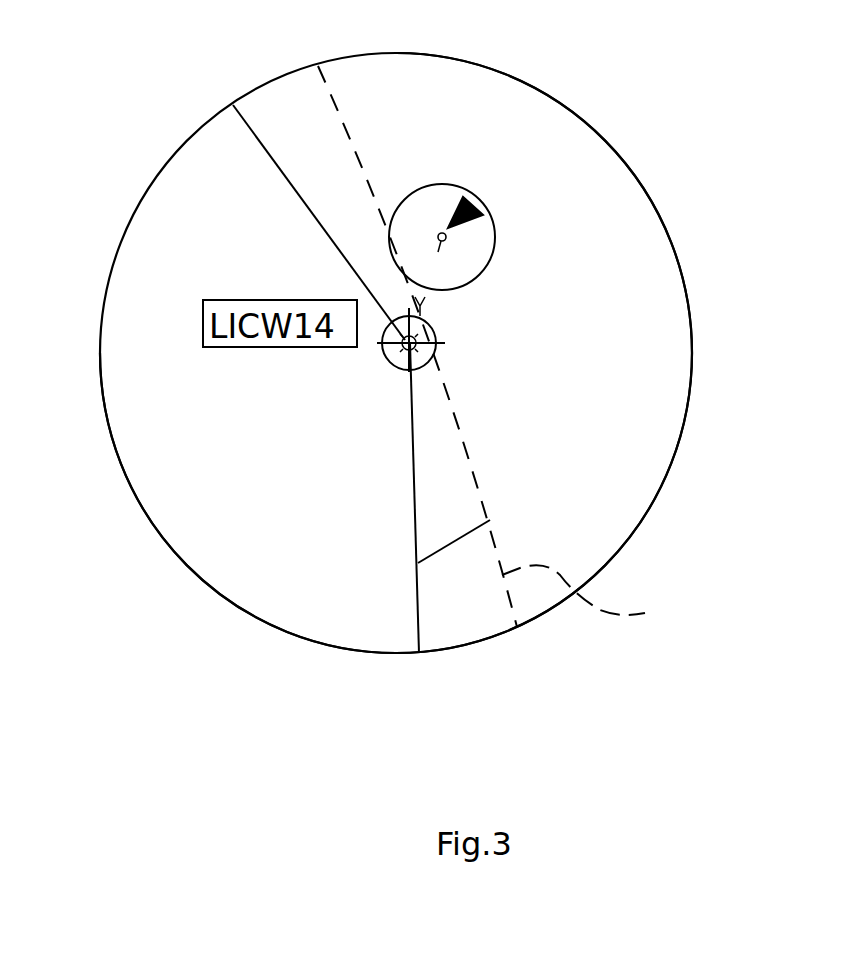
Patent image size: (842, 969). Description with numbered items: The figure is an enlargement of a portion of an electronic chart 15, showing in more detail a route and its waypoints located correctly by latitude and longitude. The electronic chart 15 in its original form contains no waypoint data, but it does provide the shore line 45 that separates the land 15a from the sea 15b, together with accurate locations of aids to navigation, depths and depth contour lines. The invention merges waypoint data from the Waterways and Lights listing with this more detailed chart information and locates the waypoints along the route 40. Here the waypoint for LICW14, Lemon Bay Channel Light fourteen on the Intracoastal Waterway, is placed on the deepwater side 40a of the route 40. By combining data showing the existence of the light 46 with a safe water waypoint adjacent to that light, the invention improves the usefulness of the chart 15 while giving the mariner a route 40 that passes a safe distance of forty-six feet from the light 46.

The electronic chart 15 is at (276, 501).
The land 15a is at (647, 270).
The sea 15b is at (297, 553).
The route 40 is at (430, 346).
The deepwater side 40a is at (390, 449).
The shore line 45 is at (596, 600).
The light 46 is at (448, 160).